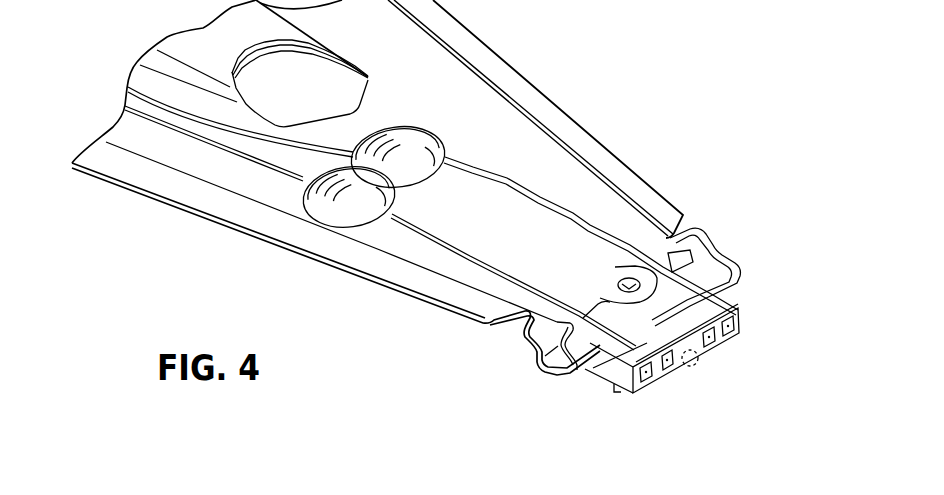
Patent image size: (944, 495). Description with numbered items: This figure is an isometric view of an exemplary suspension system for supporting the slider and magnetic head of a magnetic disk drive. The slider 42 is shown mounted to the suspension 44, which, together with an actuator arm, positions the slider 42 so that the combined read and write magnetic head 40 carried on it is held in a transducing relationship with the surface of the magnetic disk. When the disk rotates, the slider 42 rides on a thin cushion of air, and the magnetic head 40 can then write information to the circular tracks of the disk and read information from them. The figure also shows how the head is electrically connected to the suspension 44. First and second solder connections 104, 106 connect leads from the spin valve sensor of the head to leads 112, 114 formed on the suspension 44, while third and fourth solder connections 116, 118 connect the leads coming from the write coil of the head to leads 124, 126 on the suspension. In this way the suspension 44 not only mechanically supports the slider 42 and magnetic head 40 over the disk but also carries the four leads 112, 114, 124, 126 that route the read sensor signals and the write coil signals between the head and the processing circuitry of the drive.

The magnetic head 40 is at (697, 365).
The slider 42 is at (583, 382).
The suspension 44 is at (548, 87).
The first solder connection 104 is at (643, 379).
The second solder connection 106 is at (733, 323).
The lead 112 is at (420, 238).
The lead 114 is at (600, 223).
The third solder connection 116 is at (667, 372).
The fourth solder connection 118 is at (714, 345).
The lead 124 is at (468, 258).
The lead 126 is at (522, 188).